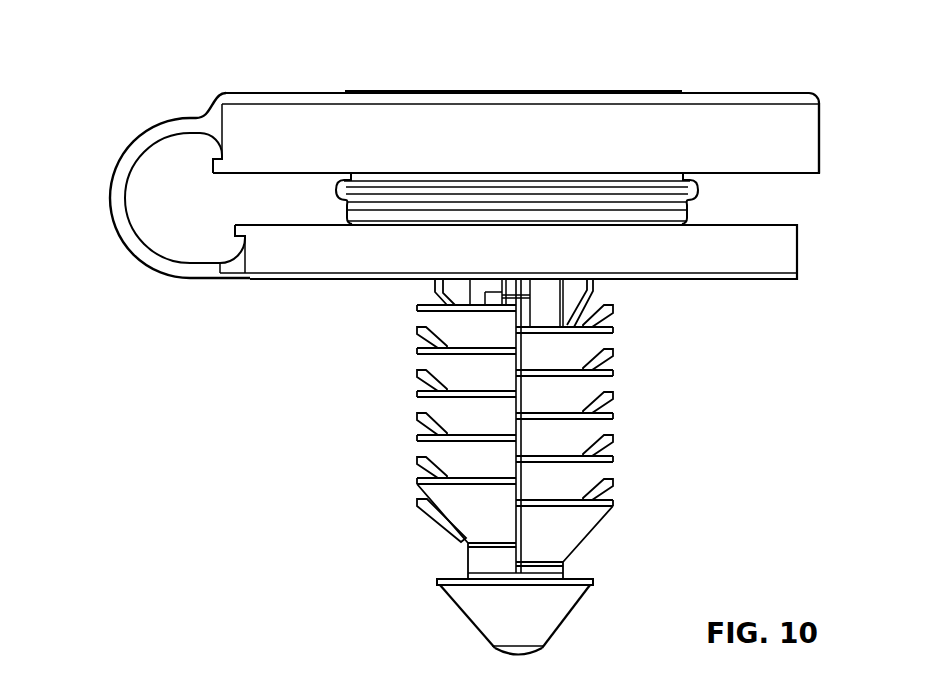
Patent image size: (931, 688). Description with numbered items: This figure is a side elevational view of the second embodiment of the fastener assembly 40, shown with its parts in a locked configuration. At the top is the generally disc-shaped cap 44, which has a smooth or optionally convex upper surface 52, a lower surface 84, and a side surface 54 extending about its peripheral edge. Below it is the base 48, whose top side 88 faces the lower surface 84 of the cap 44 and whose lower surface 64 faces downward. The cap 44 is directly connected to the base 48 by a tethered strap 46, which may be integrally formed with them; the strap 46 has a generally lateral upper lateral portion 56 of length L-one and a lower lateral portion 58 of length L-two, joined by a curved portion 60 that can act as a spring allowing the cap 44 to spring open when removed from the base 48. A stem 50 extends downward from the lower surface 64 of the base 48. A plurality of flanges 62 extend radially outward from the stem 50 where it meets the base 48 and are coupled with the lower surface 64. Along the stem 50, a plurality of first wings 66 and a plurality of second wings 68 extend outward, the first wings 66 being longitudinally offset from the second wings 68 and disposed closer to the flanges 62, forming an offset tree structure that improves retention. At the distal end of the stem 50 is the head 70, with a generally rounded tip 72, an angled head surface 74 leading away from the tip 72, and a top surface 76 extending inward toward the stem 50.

The fastener assembly 40 is at (146, 40).
The cap 44 is at (717, 103).
The strap 46 is at (127, 222).
The base 48 is at (783, 252).
The stem 50 is at (482, 368).
The upper surface 52 is at (300, 92).
The side surface 54 is at (820, 145).
The upper lateral portion 56 is at (183, 127).
The lower lateral portion 58 is at (183, 268).
The curved portion 60 is at (110, 198).
The flanges 62 is at (437, 282).
The lower surface 64 is at (305, 283).
The first wings 66 is at (418, 479).
The second wings 68 is at (613, 500).
The head 70 is at (498, 615).
The tip 72 is at (518, 653).
The head surface 74 is at (470, 623).
The top surface 76 is at (577, 575).
The lower surface 84 is at (730, 175).
The top side 88 is at (779, 224).